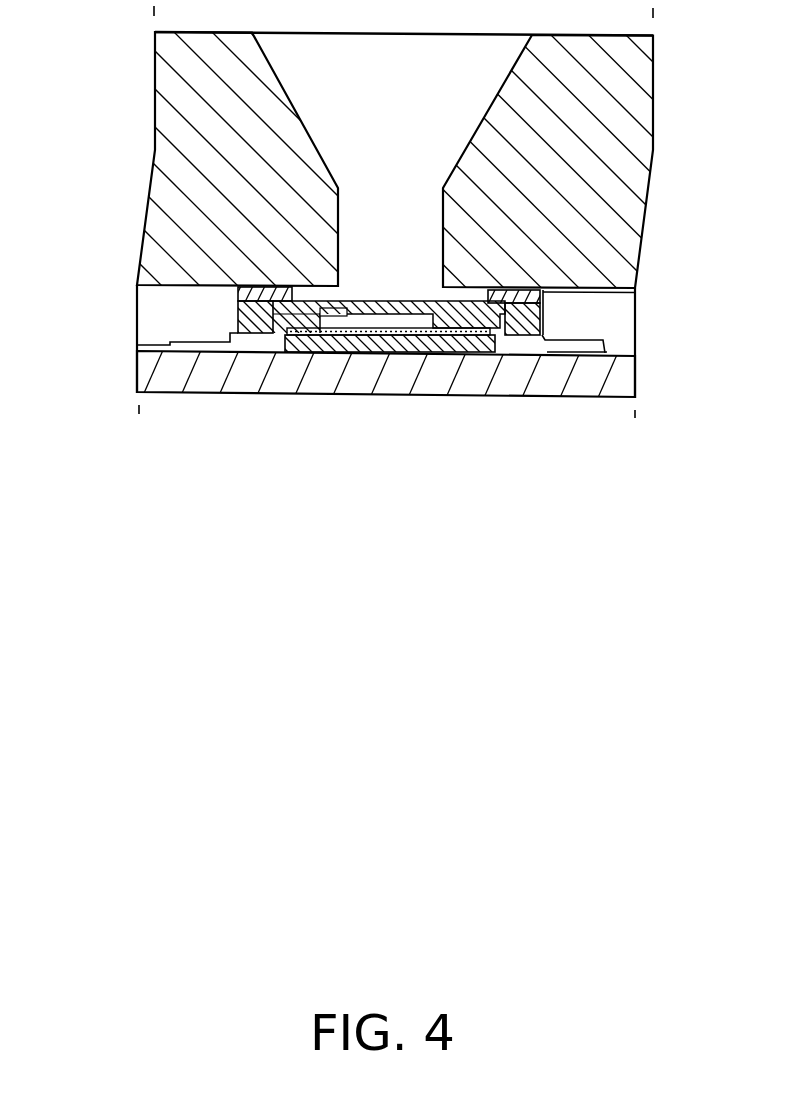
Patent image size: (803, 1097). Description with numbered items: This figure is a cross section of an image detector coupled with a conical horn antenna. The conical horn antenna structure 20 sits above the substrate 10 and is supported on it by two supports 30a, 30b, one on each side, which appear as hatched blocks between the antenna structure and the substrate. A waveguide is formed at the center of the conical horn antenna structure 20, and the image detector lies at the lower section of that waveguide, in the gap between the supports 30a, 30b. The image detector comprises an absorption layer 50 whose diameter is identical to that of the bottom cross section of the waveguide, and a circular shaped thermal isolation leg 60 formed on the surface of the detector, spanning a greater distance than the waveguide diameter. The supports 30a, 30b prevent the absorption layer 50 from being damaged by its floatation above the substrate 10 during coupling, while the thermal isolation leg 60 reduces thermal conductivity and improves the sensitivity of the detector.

The substrate 10 is at (237, 375).
The conical horn antenna structure 20 is at (188, 126).
The support 30a is at (237, 298).
The support 30b is at (543, 297).
The absorption layer 50 is at (432, 325).
The thermal isolation leg 60 is at (312, 345).